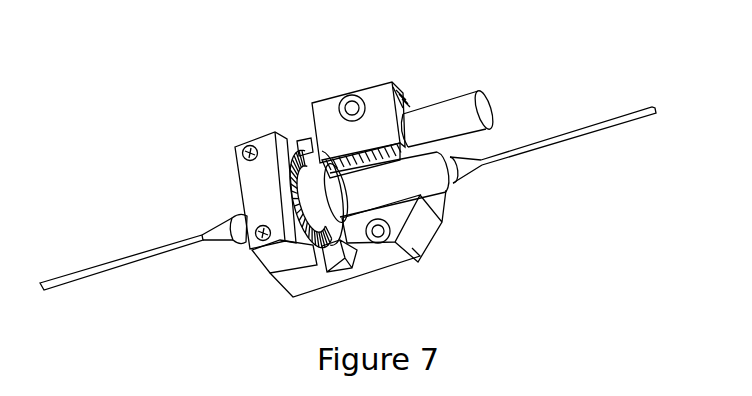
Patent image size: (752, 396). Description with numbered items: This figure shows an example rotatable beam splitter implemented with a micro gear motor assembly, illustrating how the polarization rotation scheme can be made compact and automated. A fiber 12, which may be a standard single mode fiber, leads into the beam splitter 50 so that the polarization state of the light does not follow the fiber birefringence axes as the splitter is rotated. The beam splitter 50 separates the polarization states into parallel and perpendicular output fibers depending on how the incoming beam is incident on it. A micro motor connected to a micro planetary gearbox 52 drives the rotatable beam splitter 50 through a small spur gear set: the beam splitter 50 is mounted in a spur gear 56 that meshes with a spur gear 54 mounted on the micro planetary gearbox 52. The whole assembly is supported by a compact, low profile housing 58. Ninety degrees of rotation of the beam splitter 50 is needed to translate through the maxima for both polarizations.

The fiber 12 is at (70, 272).
The beam splitter 50 is at (458, 181).
The micro planetary gearbox 52 is at (488, 93).
The spur gear 54 is at (300, 136).
The spur gear 56 is at (289, 217).
The housing 58 is at (413, 251).